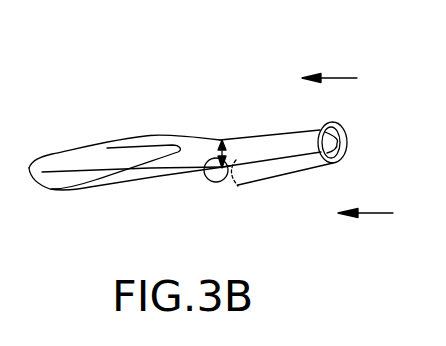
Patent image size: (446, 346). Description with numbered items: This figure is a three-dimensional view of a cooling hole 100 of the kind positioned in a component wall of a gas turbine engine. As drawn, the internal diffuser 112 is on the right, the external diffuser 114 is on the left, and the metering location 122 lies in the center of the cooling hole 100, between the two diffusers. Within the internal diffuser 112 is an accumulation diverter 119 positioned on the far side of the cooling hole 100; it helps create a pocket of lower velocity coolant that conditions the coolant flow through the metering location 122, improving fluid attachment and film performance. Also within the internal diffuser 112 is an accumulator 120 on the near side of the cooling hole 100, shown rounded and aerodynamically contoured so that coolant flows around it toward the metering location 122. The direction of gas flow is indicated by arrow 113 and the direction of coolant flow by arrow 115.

The cooling hole 100 is at (245, 80).
The internal diffuser 112 is at (343, 185).
The arrow 113 is at (332, 66).
The external diffuser 114 is at (18, 123).
The arrow 115 is at (366, 231).
The accumulation diverter 119 is at (347, 152).
The accumulator 120 is at (203, 183).
The metering location 122 is at (216, 158).